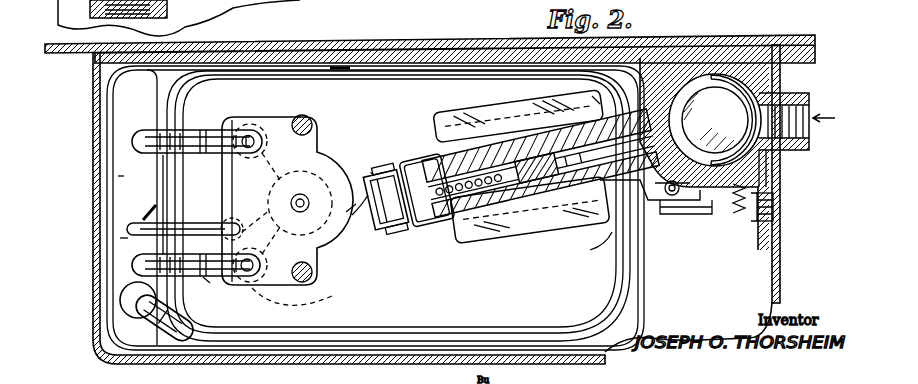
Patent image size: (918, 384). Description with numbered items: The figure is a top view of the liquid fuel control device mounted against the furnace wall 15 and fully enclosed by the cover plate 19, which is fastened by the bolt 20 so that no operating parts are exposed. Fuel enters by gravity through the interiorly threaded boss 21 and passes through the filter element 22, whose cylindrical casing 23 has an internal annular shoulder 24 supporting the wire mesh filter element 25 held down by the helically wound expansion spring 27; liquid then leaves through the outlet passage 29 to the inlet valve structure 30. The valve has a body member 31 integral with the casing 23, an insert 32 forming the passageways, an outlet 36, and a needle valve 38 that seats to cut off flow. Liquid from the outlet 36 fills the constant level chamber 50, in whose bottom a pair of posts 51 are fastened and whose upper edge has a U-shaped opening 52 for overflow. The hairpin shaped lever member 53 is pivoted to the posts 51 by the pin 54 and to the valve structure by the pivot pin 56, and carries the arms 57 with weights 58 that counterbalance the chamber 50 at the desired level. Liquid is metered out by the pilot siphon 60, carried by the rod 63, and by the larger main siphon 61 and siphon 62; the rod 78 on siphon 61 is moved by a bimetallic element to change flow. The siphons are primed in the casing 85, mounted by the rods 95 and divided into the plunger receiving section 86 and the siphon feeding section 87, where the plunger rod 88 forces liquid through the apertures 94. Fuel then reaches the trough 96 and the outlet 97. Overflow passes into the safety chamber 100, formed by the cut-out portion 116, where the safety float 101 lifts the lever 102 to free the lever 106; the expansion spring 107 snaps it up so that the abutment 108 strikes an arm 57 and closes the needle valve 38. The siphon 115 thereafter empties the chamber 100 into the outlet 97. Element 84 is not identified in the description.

The furnace wall 15 is at (326, 44).
The cover plate 19 is at (92, 150).
The bolt 20 is at (780, 212).
The interiorly threaded boss 21 is at (808, 110).
The filter element 22 is at (732, 190).
The cylindrical casing 23 is at (468, 124).
The internal annular shoulder 24 is at (770, 160).
The filter element 25 is at (715, 120).
The helically wound expansion spring 27 is at (762, 100).
The outlet passage 29 is at (602, 92).
The inlet valve structure 30 is at (405, 117).
The body member 31 is at (531, 118).
The insert 32 is at (585, 193).
The outlet 36 is at (552, 214).
The needle valve 38 is at (472, 214).
The chamber 50 is at (618, 312).
The posts 51 is at (379, 201).
The U-shaped opening 52 is at (349, 70).
The lever member 53 is at (383, 179).
The pin 54 is at (339, 217).
The pivot pin 56 is at (424, 177).
The arms 57 is at (572, 99).
The weights 58 is at (468, 122).
The pilot siphon 60 is at (210, 225).
The main siphon 61 is at (214, 287).
The siphon 62 is at (196, 154).
The rod 63 is at (184, 205).
The rod 78 is at (212, 130).
The partition 84 is at (127, 186).
The casing 85 is at (333, 246).
The plunger receiving section 86 is at (354, 165).
The siphon feeding section 87 is at (270, 300).
The rod 88 is at (300, 196).
The apertures 94 is at (287, 201).
The rods 95 is at (300, 116).
The trough 96 is at (122, 92).
The outlet 97 is at (121, 247).
The safety chamber 100 is at (622, 254).
The safety float 101 is at (632, 290).
The lever 102 is at (604, 242).
The lever 106 is at (684, 216).
The expansion spring 107 is at (702, 212).
The abutment 108 is at (652, 210).
The siphon 115 is at (158, 340).
The cut-out portion 116 is at (200, 303).